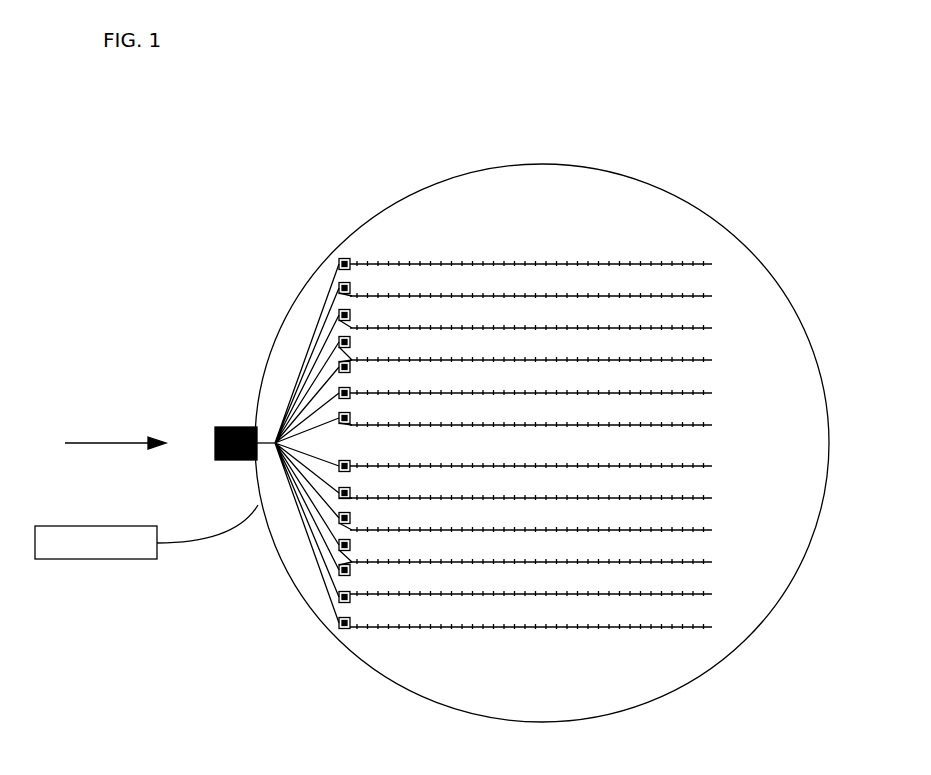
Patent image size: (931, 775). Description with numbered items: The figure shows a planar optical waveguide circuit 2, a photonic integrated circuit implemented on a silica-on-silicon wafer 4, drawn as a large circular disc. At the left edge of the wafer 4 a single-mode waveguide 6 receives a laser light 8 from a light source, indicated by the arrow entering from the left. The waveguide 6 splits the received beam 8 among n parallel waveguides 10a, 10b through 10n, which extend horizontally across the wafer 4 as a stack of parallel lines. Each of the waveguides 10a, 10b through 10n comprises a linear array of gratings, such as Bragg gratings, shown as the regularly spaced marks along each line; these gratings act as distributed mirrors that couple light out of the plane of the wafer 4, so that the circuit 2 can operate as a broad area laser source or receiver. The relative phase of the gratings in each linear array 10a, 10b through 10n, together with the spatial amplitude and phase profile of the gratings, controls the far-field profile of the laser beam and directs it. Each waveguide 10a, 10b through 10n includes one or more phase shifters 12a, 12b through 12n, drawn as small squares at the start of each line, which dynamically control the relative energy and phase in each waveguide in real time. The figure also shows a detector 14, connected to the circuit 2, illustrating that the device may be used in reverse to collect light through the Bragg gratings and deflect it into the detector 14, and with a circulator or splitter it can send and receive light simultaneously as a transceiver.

The planar optical waveguide circuit 2 is at (324, 49).
The silica-on-silicon wafer 4 is at (617, 177).
The single-mode waveguide 6 is at (220, 428).
The laser light 8 is at (108, 439).
The parallel waveguide 10a is at (712, 262).
The parallel waveguide 10b is at (712, 296).
The parallel waveguide 10n is at (712, 627).
The phase shifter 12a is at (339, 262).
The phase shifter 12b is at (339, 289).
The phase shifter 12n is at (339, 626).
The detector 14 is at (62, 527).